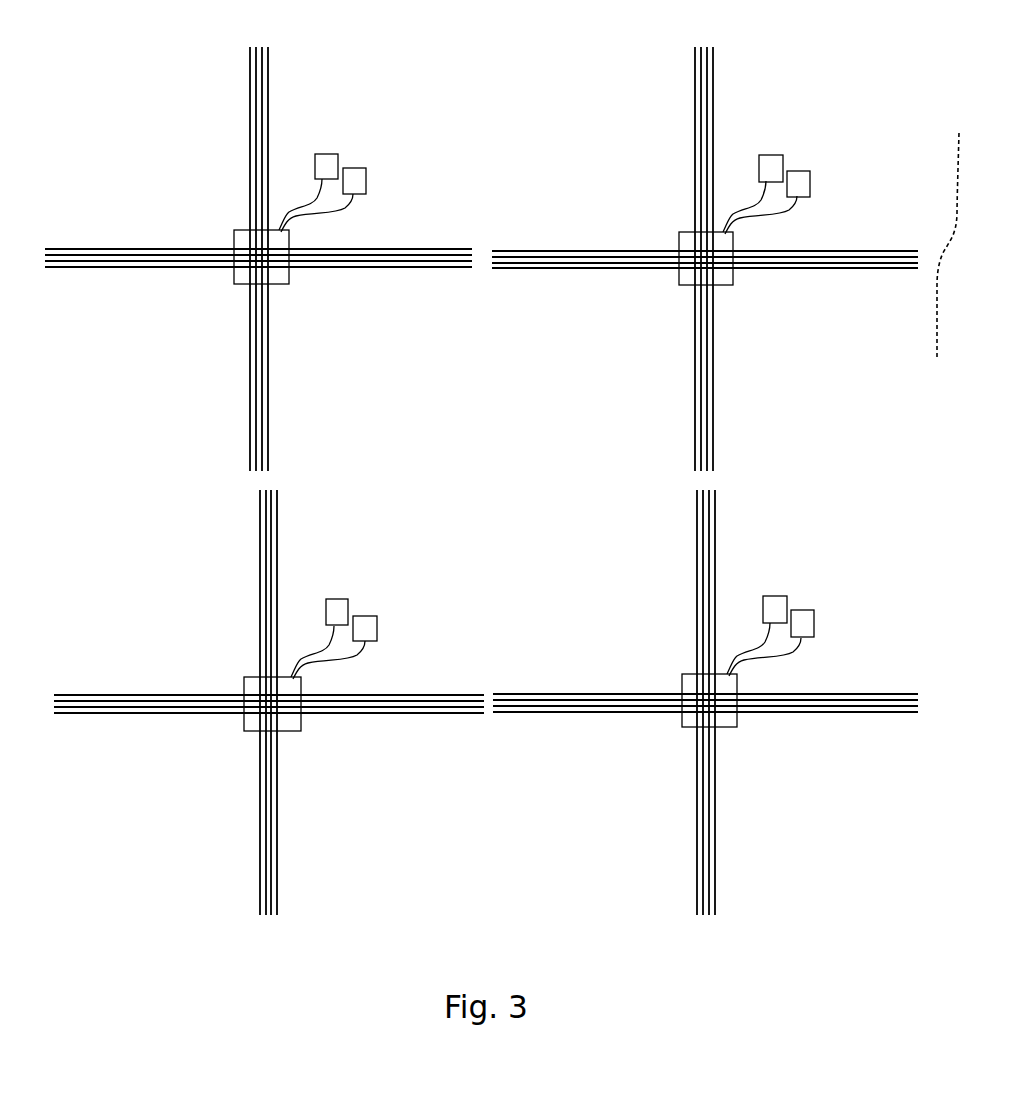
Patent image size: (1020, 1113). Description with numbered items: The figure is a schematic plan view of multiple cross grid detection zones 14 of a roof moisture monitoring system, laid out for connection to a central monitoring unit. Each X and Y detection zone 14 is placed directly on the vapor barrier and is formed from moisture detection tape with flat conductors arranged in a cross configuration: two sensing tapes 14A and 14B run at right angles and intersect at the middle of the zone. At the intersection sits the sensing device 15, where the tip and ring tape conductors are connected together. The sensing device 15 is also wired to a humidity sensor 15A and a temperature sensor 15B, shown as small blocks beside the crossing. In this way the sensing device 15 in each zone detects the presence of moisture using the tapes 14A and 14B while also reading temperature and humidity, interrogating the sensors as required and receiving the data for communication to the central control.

The detection zones 14 is at (301, 735).
The sensing tape 14A is at (714, 817).
The sensing tape 14B is at (810, 712).
The sensing device 15 is at (245, 718).
The humidity sensor 15A is at (771, 596).
The temperature sensor 15B is at (805, 610).